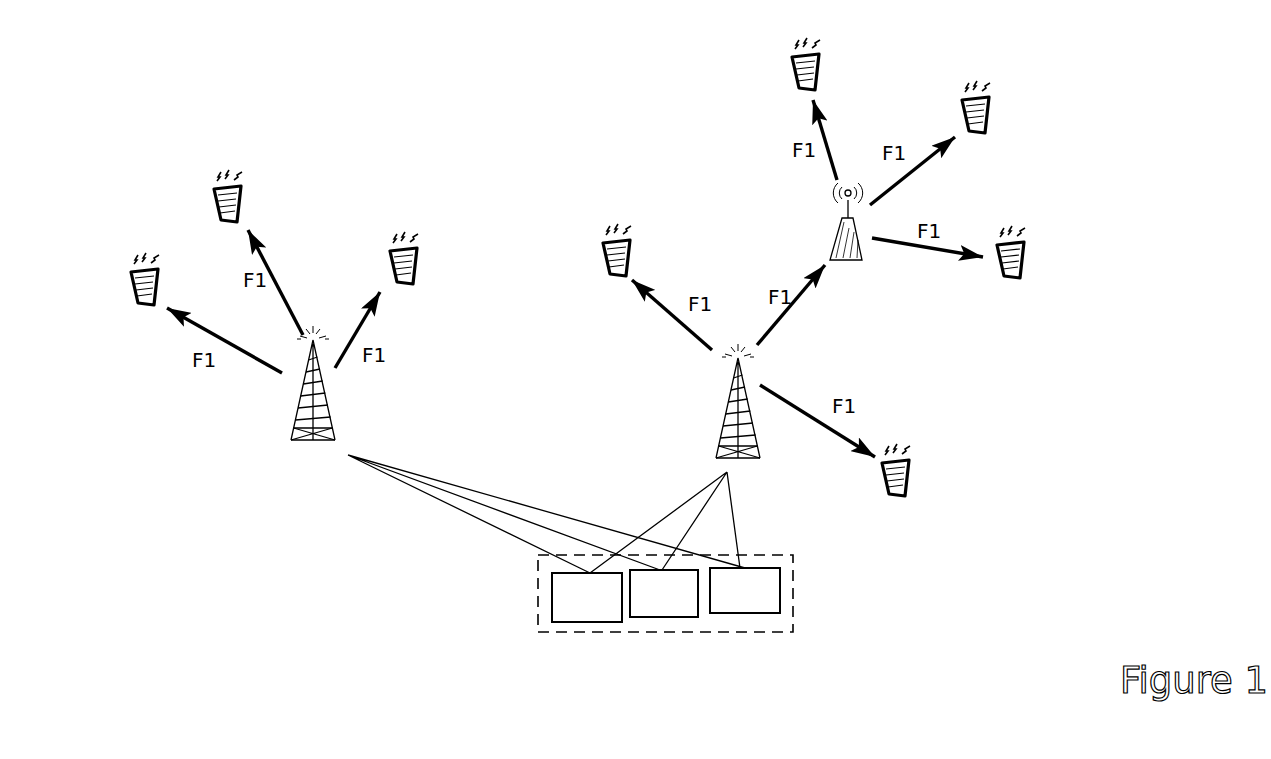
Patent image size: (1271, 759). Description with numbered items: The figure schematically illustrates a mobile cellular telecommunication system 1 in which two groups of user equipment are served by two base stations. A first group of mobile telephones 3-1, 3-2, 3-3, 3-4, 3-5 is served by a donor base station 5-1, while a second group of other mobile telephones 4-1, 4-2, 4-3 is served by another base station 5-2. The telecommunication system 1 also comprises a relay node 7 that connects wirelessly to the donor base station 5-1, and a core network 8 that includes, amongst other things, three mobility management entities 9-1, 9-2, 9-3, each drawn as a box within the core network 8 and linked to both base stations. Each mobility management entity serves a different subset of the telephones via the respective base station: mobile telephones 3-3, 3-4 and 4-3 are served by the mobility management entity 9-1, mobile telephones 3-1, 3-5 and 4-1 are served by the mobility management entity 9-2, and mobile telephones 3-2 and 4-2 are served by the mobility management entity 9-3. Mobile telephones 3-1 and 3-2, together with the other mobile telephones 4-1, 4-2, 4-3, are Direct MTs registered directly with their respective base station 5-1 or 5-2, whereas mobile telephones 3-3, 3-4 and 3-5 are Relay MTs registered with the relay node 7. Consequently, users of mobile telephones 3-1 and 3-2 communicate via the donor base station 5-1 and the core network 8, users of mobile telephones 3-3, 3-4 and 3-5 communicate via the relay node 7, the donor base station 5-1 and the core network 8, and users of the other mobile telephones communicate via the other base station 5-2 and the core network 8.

The mobile telecommunication system 1 is at (915, 537).
The mobile telephone 3-1 is at (880, 473).
The mobile telephone 3-2 is at (602, 258).
The mobile telephone 3-3 is at (990, 108).
The mobile telephone 3-4 is at (800, 82).
The mobile telephone 3-5 is at (1027, 252).
The mobile telephone 4-1 is at (123, 273).
The mobile telephone 4-2 is at (250, 192).
The mobile telephone 4-3 is at (425, 258).
The donor base station 5-1 is at (722, 418).
The base station 5-2 is at (287, 407).
The relay node 7 is at (862, 258).
The core network 8 is at (793, 595).
The mobility management entity 9-1 is at (593, 622).
The mobility management entity 9-2 is at (673, 617).
The mobility management entity 9-3 is at (750, 613).